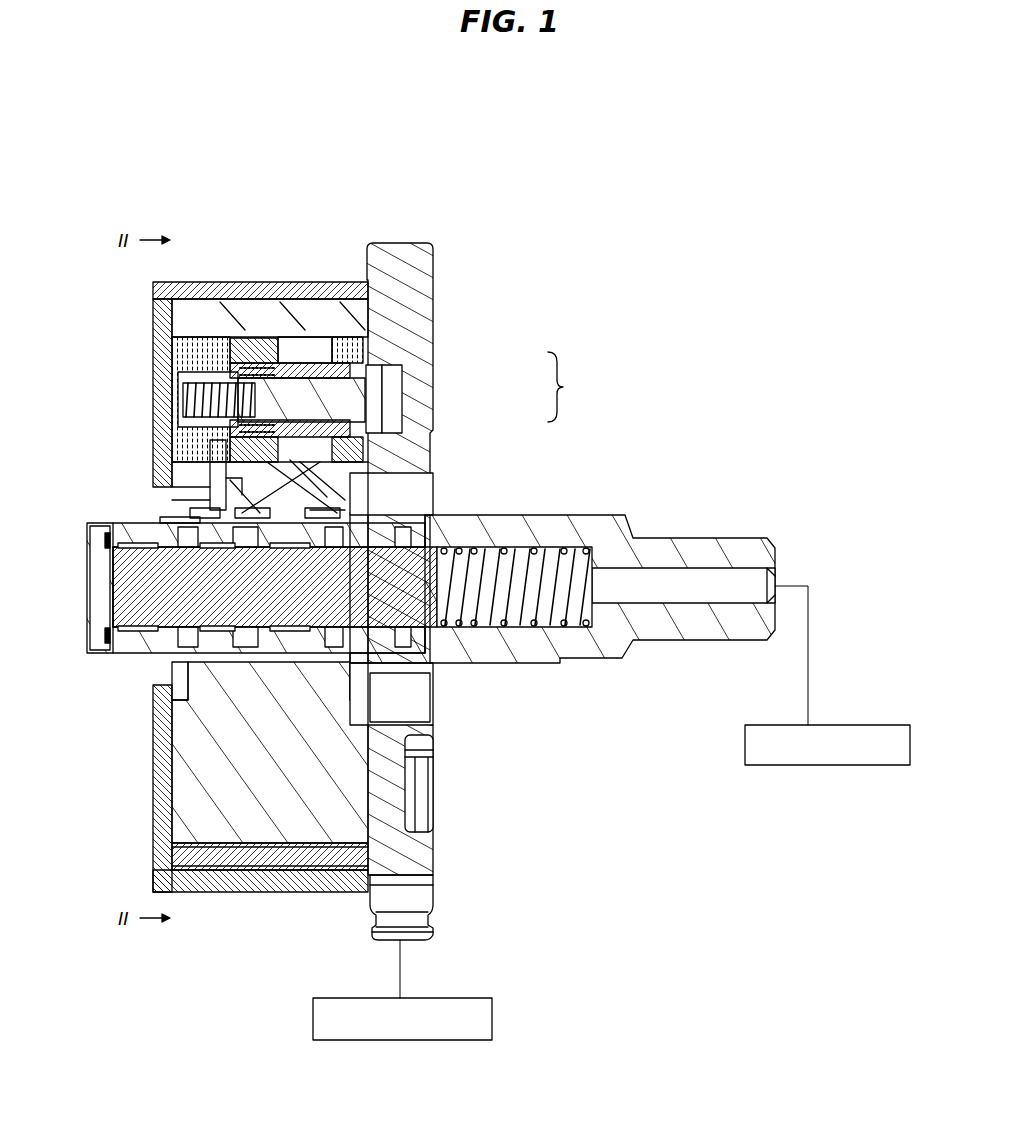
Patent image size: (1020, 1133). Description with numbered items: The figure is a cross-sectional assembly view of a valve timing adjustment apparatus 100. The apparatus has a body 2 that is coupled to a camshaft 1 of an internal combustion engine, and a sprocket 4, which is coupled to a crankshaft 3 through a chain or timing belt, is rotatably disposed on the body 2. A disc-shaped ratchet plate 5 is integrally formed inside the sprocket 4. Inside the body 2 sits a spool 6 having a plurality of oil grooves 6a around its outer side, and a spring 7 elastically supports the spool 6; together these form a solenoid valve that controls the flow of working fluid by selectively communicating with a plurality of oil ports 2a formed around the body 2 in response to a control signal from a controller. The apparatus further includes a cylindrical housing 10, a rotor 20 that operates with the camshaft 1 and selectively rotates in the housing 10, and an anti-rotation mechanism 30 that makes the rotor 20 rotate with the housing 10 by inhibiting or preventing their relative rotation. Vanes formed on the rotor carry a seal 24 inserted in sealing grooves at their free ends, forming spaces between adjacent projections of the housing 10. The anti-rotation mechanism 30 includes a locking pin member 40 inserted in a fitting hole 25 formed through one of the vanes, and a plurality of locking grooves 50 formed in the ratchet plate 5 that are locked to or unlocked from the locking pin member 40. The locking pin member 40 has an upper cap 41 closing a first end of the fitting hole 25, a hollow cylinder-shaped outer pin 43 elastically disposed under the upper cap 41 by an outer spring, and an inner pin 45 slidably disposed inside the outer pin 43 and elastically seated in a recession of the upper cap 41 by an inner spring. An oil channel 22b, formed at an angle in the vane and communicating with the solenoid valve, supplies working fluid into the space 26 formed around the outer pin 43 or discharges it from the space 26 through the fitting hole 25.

The valve timing adjustment apparatus 100 is at (172, 118).
The housing 10 is at (257, 281).
The rotor 20 is at (183, 318).
The fitting hole 25 is at (246, 345).
The space 26 is at (305, 355).
The upper cap 41 is at (195, 356).
The ratchet plate 5 is at (425, 357).
The locking pin member 40 is at (368, 373).
The locking grooves 50 is at (408, 398).
The anti-rotation mechanism 30 is at (569, 387).
The inner pin 45 is at (365, 418).
The outer pin 43 is at (345, 437).
The oil channel 22b is at (232, 481).
The oil ports 2a is at (248, 548).
The spool 6 is at (162, 578).
The oil grooves 6a is at (200, 635).
The seal 24 is at (222, 856).
The spring 7 is at (566, 546).
The body 2 is at (698, 551).
The camshaft 1 is at (853, 725).
The sprocket 4 is at (430, 903).
The crankshaft 3 is at (462, 998).